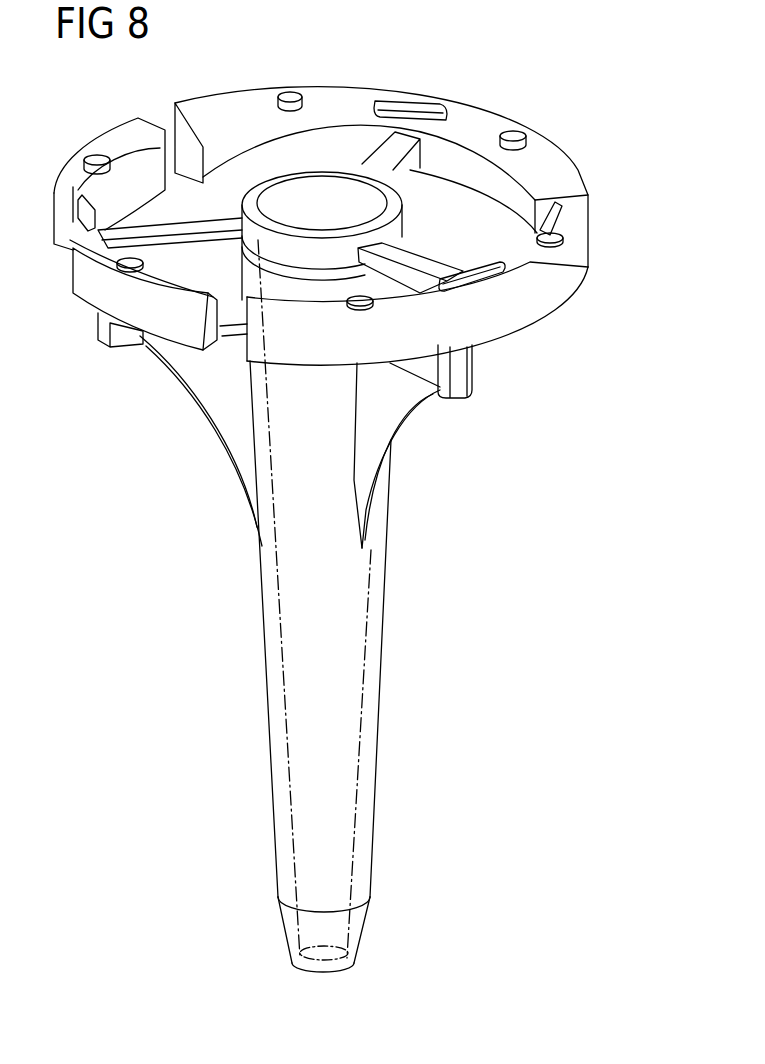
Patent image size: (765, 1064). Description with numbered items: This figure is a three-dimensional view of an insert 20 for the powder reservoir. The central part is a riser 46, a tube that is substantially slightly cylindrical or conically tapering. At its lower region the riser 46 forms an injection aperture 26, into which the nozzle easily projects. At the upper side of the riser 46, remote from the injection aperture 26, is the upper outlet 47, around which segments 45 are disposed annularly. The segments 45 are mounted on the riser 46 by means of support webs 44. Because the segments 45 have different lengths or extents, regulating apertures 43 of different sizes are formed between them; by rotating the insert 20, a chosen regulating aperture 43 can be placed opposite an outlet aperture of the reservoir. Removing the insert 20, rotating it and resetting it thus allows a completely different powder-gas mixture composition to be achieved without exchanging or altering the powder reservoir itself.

The insert 20 is at (580, 116).
The injection aperture 26 is at (342, 928).
The regulating apertures 43 is at (165, 133).
The support webs 44 is at (392, 422).
The segments 45 is at (483, 107).
The riser 46 is at (374, 629).
The upper outlet 47 is at (267, 195).